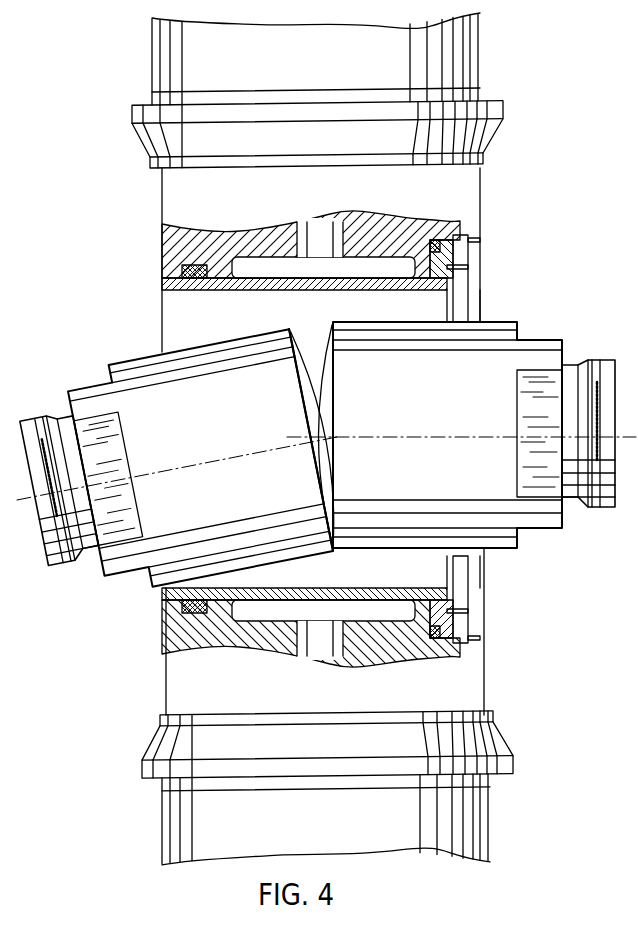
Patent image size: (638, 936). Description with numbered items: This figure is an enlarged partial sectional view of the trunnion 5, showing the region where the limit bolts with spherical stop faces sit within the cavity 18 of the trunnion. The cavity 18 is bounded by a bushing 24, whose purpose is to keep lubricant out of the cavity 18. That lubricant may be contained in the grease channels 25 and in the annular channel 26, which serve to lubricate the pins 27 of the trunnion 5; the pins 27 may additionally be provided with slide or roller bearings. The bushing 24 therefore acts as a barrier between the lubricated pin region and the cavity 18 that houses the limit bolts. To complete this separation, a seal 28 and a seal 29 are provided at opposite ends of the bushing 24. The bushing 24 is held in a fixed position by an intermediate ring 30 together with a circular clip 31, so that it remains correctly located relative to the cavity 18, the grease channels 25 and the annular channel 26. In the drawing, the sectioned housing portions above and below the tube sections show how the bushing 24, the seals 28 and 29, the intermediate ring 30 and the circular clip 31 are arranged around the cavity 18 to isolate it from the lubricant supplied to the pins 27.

The trunnion 5 is at (457, 192).
The cavity 18 is at (418, 565).
The bushing 24 is at (210, 287).
The grease channels 25 is at (332, 640).
The annular channel 26 is at (395, 610).
The pins 27 is at (487, 822).
The seal 28 is at (165, 277).
The seal 29 is at (460, 233).
The intermediate ring 30 is at (450, 267).
The circular clip 31 is at (478, 241).